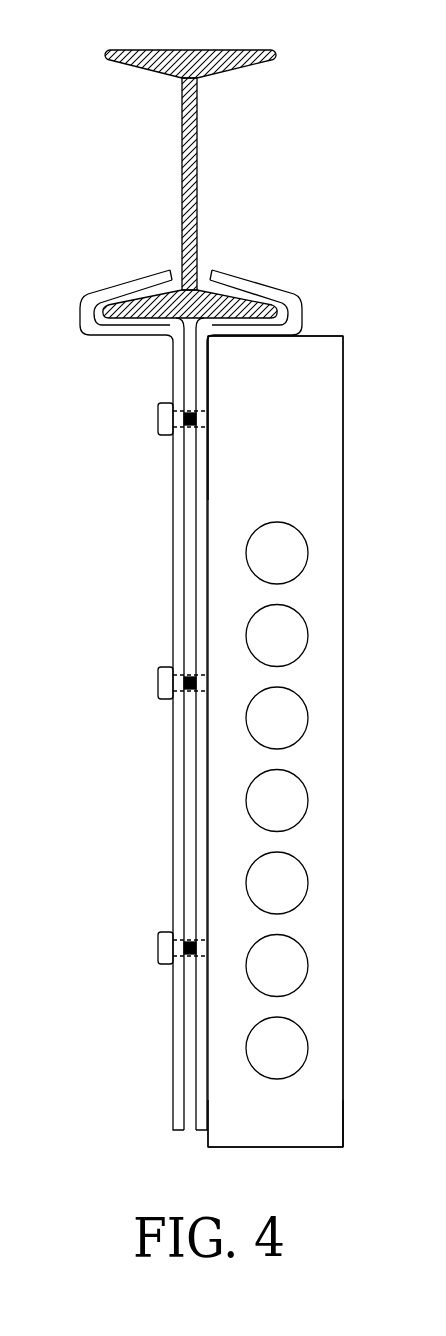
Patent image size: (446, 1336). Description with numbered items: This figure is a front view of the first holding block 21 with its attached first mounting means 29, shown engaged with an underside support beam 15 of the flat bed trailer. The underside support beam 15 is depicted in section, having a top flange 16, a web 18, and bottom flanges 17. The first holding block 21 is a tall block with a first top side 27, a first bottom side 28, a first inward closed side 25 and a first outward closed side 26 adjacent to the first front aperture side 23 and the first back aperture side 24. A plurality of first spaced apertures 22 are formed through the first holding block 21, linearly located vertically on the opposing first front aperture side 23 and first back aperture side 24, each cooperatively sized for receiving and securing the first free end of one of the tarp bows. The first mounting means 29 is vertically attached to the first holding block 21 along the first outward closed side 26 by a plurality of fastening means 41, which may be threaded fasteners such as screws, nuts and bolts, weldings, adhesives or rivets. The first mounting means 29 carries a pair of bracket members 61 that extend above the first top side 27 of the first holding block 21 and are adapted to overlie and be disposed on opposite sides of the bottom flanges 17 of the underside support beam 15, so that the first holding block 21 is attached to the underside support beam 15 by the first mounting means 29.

The underside support beam 15 is at (230, 161).
The top flange 16 is at (142, 50).
The bottom flange 17 is at (175, 266).
The web 18 is at (181, 137).
The first holding block 21 is at (266, 736).
The first spaced apertures 22 is at (297, 558).
The first front aperture side 23 is at (315, 1108).
The first back aperture side 24 is at (303, 492).
The first inward closed side 25 is at (205, 1140).
The first outward closed side 26 is at (345, 380).
The first top side 27 is at (320, 336).
The first bottom side 28 is at (318, 1148).
The first mounting means 29 is at (150, 343).
The fastening means 41 is at (160, 417).
The bracket members 61 is at (120, 282).